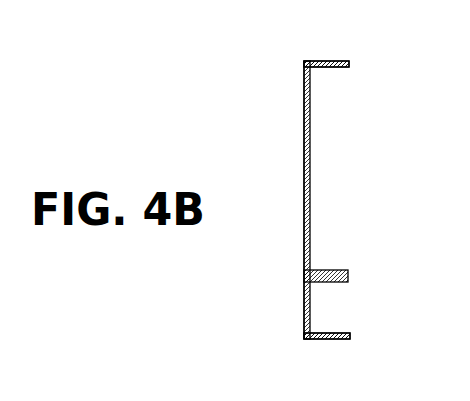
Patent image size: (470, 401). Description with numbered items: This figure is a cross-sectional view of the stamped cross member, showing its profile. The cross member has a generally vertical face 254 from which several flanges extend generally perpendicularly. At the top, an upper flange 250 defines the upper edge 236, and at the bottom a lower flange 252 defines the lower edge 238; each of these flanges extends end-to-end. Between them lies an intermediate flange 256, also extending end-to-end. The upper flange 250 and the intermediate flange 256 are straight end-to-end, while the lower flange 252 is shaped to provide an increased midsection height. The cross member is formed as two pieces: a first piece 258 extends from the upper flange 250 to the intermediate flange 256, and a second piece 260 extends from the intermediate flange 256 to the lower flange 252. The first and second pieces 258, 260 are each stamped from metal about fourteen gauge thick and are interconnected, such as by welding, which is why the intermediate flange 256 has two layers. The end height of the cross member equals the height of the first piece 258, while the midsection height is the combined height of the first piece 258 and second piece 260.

The upper edge 236 is at (321, 61).
The lower edge 238 is at (323, 340).
The upper flange 250 is at (352, 64).
The lower flange 252 is at (351, 334).
The vertical face 254 is at (312, 218).
The intermediate flange 256 is at (349, 273).
The first piece 258 is at (302, 149).
The second piece 260 is at (302, 312).